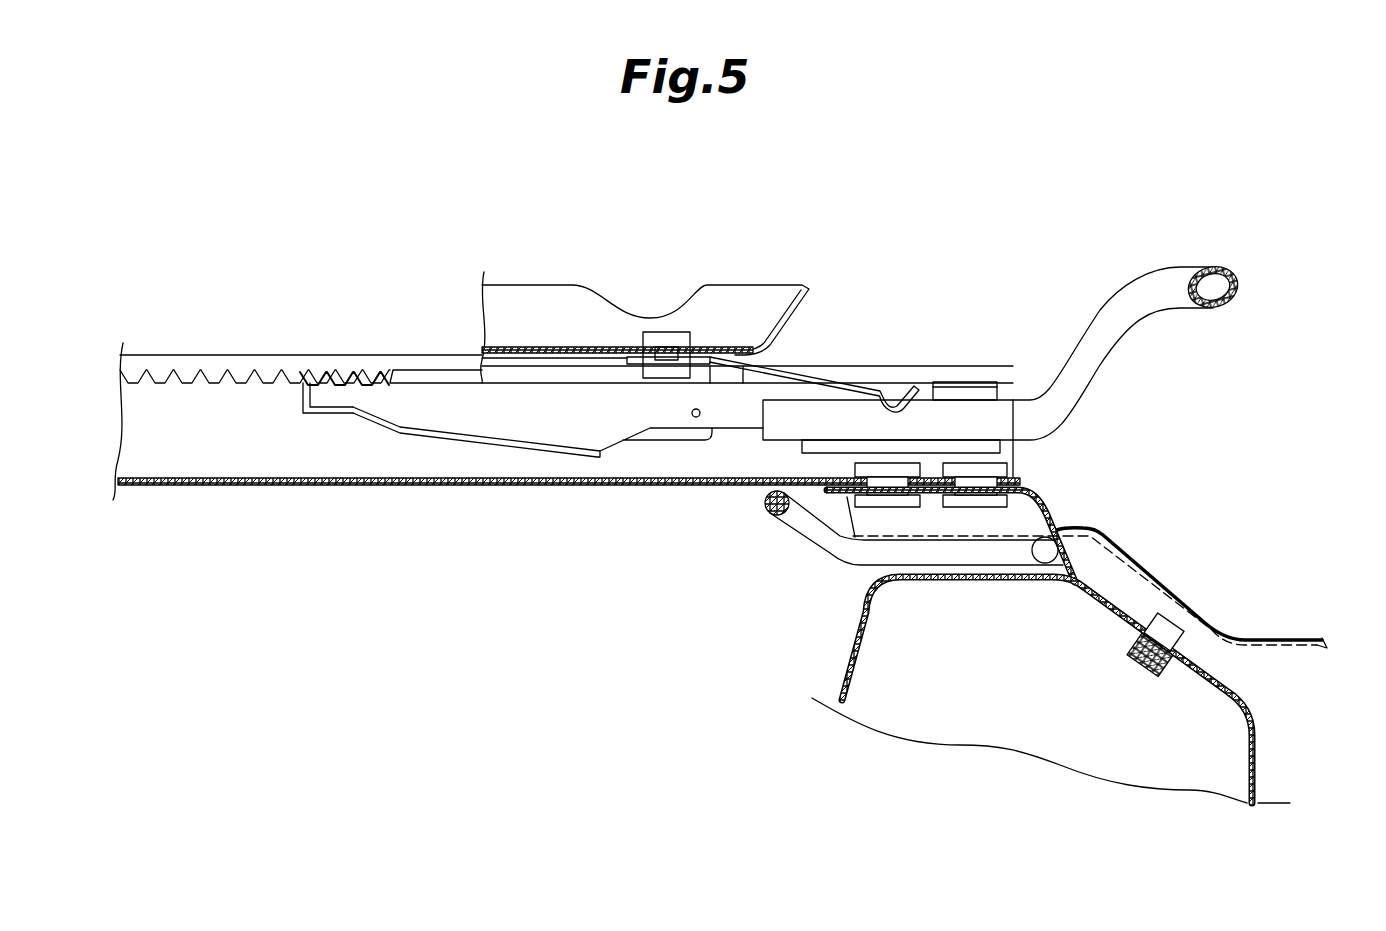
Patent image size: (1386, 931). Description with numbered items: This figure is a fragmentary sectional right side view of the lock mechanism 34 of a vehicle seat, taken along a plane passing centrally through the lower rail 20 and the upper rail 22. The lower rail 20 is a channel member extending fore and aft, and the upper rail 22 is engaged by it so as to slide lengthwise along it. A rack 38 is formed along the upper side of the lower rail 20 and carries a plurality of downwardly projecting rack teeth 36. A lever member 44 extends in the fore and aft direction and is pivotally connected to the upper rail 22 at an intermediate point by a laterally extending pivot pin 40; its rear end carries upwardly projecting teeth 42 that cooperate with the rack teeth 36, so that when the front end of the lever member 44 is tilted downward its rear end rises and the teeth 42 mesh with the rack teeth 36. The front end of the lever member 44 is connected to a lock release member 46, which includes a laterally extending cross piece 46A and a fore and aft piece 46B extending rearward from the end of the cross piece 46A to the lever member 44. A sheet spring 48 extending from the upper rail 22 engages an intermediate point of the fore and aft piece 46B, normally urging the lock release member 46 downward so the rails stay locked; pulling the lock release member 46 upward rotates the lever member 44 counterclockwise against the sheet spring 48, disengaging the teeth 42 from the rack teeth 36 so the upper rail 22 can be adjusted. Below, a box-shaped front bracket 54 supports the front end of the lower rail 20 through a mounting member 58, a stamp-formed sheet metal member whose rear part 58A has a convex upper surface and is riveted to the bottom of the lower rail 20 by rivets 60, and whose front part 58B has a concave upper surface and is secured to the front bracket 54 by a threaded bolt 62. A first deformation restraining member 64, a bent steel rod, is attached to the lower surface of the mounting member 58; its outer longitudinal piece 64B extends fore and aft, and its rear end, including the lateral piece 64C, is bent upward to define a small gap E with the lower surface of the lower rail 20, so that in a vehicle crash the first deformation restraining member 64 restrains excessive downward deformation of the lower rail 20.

The lower rail 20 is at (405, 462).
The upper rail 22 is at (742, 300).
The lock mechanism 34 is at (543, 463).
The rack teeth 36 is at (307, 400).
The rack 38 is at (205, 362).
The pivot pin 40 is at (696, 420).
The teeth 42 is at (325, 385).
The lever member 44 is at (422, 385).
The lock release member 46 is at (1148, 278).
The cross piece 46A is at (1225, 306).
The fore and aft piece 46B is at (950, 410).
The sheet spring 48 is at (812, 380).
The front bracket 54 is at (1270, 756).
The mounting member 58 is at (1106, 538).
The rear part 58A is at (1027, 503).
The front part 58B is at (1147, 587).
The rivets 60 is at (977, 500).
The threaded bolt 62 is at (1167, 630).
The first deformation restraining member 64 is at (828, 572).
The outer longitudinal piece 64B is at (967, 557).
The lateral piece 64C is at (762, 507).
The small gap E is at (770, 490).